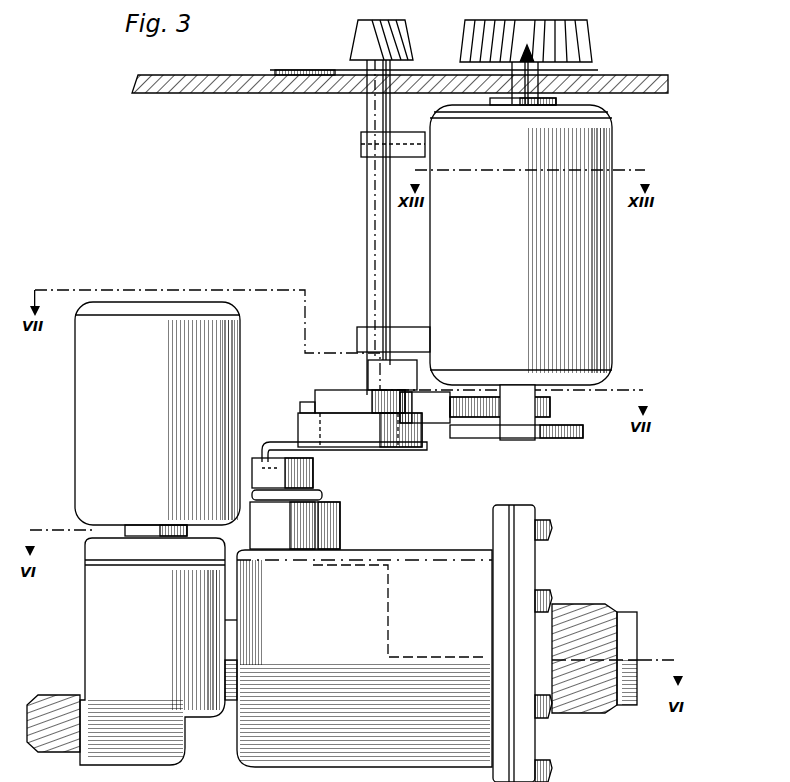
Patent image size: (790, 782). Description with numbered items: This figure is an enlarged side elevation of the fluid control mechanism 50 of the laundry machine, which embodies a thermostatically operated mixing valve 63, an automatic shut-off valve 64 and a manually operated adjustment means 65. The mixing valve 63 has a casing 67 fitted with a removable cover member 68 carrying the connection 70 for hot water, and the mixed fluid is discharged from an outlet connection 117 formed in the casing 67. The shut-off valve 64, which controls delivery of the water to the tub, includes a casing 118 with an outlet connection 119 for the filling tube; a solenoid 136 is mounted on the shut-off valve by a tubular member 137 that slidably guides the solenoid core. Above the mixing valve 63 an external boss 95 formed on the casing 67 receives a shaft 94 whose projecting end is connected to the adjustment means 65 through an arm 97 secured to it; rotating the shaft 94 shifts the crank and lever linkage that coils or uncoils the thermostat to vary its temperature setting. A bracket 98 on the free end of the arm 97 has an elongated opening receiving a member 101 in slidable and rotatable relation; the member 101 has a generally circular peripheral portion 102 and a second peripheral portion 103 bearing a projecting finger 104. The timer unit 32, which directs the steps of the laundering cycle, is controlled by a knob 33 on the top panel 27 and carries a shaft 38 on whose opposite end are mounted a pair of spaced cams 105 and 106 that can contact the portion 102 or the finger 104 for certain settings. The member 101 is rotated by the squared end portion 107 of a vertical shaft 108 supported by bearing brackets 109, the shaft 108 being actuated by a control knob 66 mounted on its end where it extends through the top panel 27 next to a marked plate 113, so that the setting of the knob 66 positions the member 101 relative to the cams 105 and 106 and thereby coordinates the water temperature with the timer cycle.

The top panel 27 is at (666, 84).
The plate 113 is at (278, 72).
The control knob 66 is at (357, 40).
The vertical shaft 108 is at (381, 229).
The adjustment means 65 is at (366, 291).
The bearing brackets 109 is at (370, 150).
The knob 33 is at (562, 38).
The shaft 38 is at (550, 70).
The timer unit 32 is at (598, 152).
The squared end portion 107 is at (380, 390).
The second peripheral portion 103 is at (337, 400).
The member 101 is at (305, 414).
The circular peripheral portion 102 is at (350, 432).
The projecting finger 104 is at (435, 410).
The cam 105 is at (540, 408).
The cam 106 is at (538, 440).
The bracket 98 is at (298, 441).
The arm 97 is at (305, 476).
The shaft 94 is at (325, 496).
The external boss 95 is at (275, 532).
The fluid control mechanism 50 is at (338, 536).
The mixing valve 63 is at (430, 552).
The casing 67 is at (460, 615).
The cover member 68 is at (527, 564).
The connection 70 is at (584, 715).
The solenoid 136 is at (92, 420).
The tubular member 137 is at (143, 508).
The shut-off valve 64 is at (86, 603).
The casing 118 is at (108, 628).
The outlet connection 119 is at (54, 714).
The outlet connection 117 is at (228, 690).